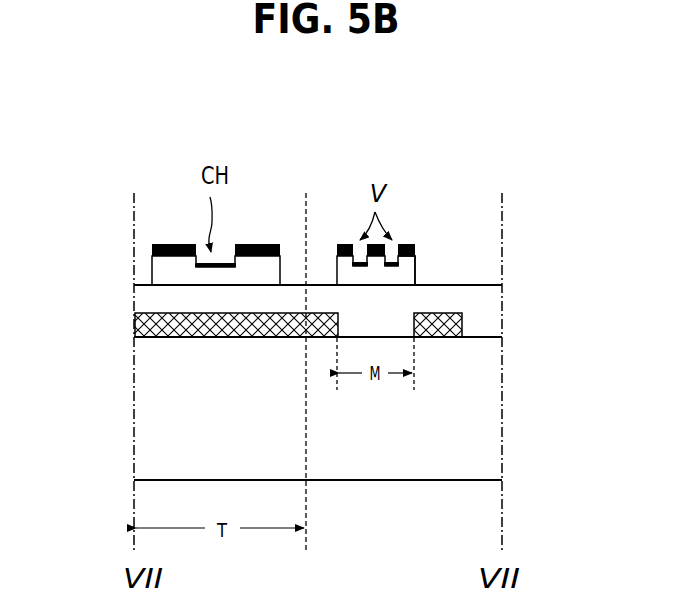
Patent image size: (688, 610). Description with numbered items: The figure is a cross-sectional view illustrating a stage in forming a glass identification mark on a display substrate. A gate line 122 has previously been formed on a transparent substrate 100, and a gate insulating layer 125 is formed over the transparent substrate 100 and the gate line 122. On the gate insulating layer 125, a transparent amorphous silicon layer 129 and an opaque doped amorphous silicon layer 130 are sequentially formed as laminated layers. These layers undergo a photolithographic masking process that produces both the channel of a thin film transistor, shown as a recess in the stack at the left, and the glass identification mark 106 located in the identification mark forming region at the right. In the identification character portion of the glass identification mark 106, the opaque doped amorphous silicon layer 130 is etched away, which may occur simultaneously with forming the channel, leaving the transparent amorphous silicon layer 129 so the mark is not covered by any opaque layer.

The transparent substrate 100 is at (485, 417).
The glass identification mark 106 is at (412, 240).
The gate line 122 is at (138, 322).
The gate insulating layer 125 is at (487, 322).
The transparent amorphous silicon layer 129 is at (155, 276).
The opaque doped amorphous silicon layer 130 is at (152, 249).